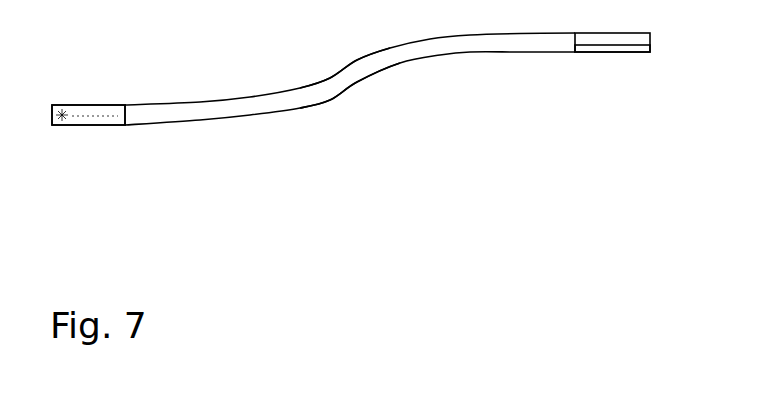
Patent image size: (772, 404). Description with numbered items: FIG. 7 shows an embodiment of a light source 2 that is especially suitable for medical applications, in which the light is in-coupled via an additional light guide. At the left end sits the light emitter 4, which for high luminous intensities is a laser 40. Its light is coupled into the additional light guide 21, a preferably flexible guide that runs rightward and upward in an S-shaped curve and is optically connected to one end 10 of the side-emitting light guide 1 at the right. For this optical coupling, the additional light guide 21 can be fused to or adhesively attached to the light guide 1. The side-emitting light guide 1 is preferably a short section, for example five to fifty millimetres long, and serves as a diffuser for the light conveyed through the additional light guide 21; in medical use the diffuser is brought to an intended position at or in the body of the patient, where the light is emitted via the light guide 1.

The side-emitting light guide 1 is at (600, 55).
The light source 2 is at (592, 240).
The light emitter 4 is at (85, 128).
The laser 40 is at (118, 168).
The end of the side-emitting light guide 10 is at (583, 55).
The additional light guide 21 is at (317, 105).